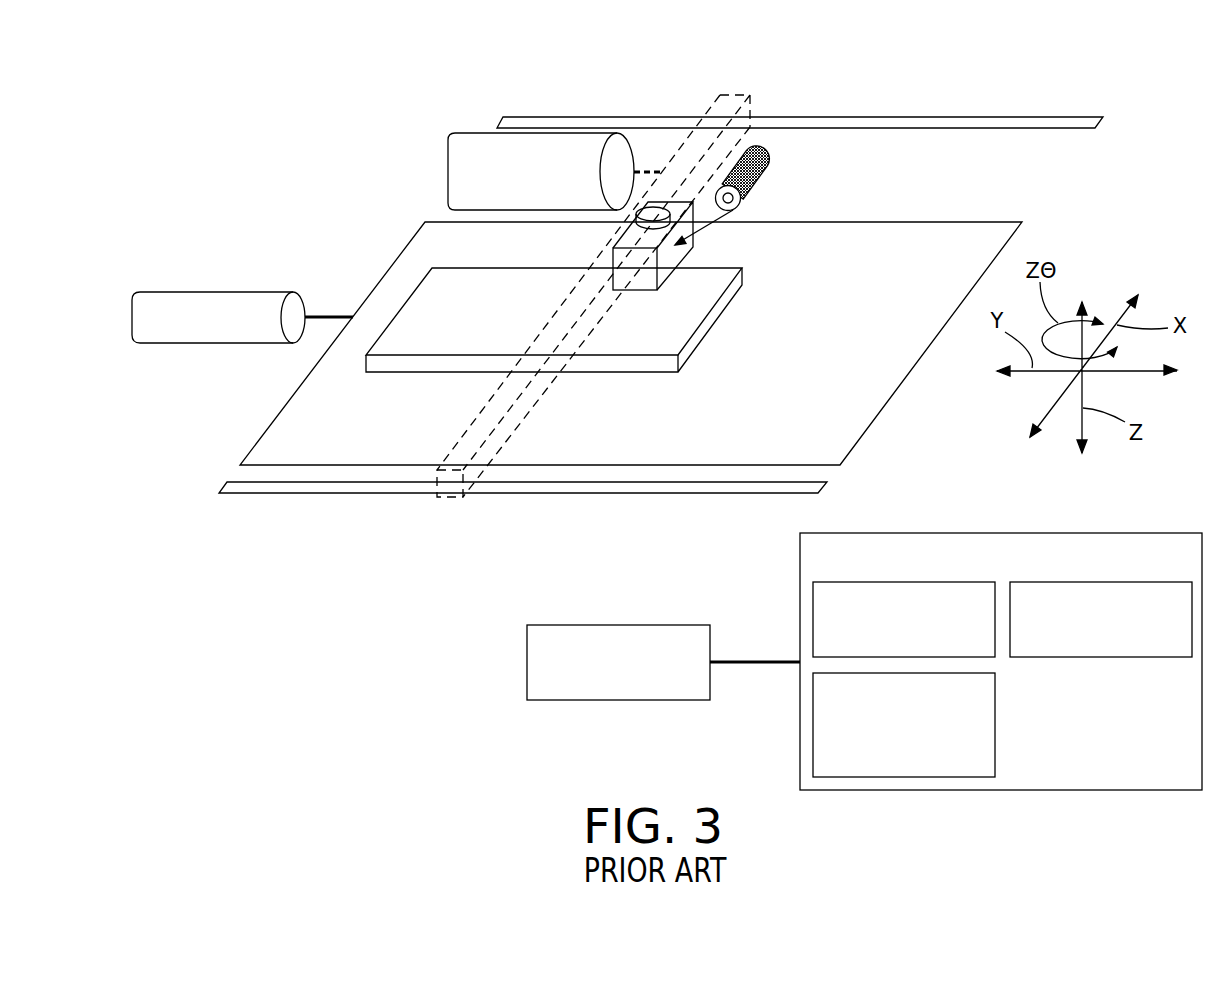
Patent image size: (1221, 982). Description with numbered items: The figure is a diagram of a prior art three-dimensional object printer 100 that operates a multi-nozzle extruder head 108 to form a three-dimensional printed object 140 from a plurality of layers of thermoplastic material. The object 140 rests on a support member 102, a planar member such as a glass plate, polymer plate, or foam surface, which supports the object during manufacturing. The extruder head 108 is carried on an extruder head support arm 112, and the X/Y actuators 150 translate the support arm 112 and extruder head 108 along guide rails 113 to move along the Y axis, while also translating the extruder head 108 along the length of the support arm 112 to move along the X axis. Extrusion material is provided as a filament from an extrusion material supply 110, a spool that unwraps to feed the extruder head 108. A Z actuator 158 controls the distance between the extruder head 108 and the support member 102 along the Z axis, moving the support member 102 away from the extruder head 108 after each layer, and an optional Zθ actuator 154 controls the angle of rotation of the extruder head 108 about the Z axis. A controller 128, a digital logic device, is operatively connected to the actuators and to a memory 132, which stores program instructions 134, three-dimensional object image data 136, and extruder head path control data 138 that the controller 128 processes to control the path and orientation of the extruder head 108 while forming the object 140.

The three-dimensional object printer 100 is at (273, 82).
The support member 102 is at (631, 343).
The extruder head 108 is at (691, 246).
The extrusion material supply 110 is at (758, 195).
The extruder head support arm 112 is at (593, 269).
The guide rails 113 is at (661, 304).
The controller 128 is at (624, 662).
The memory 132 is at (1001, 635).
The program instructions 134 is at (872, 611).
The 3D object image data 136 is at (1101, 650).
The extruder head path control data 138 is at (943, 725).
The three-dimensional printed object 140 is at (554, 353).
The X/Y actuators 150 is at (515, 171).
The Zθ actuator 154 is at (613, 235).
The Z actuator 158 is at (242, 283).